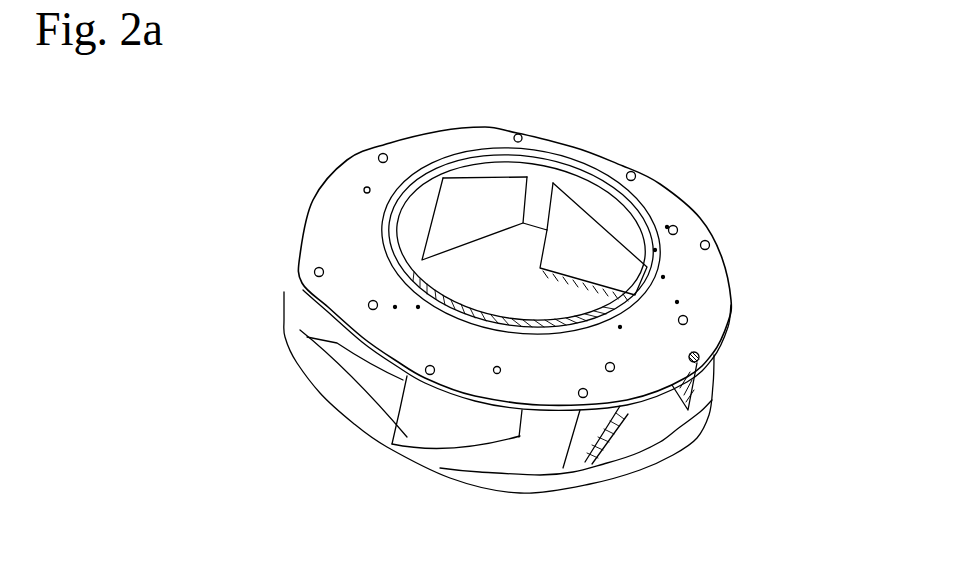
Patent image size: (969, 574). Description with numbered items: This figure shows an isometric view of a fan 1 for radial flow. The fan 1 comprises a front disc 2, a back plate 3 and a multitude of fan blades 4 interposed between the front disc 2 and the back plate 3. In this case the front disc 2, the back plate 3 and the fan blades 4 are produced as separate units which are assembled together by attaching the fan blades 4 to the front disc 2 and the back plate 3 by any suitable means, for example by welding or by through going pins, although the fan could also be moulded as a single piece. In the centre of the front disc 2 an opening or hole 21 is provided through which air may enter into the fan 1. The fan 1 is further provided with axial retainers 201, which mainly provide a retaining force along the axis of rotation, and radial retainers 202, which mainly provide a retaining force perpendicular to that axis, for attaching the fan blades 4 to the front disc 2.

The fan 1 is at (493, 328).
The front disc 2 is at (703, 297).
The opening 21 is at (448, 222).
The axial retainer 201 is at (710, 350).
The radial retainer 202 is at (347, 293).
The back plate 3 is at (651, 427).
The fan blade 4 is at (303, 335).